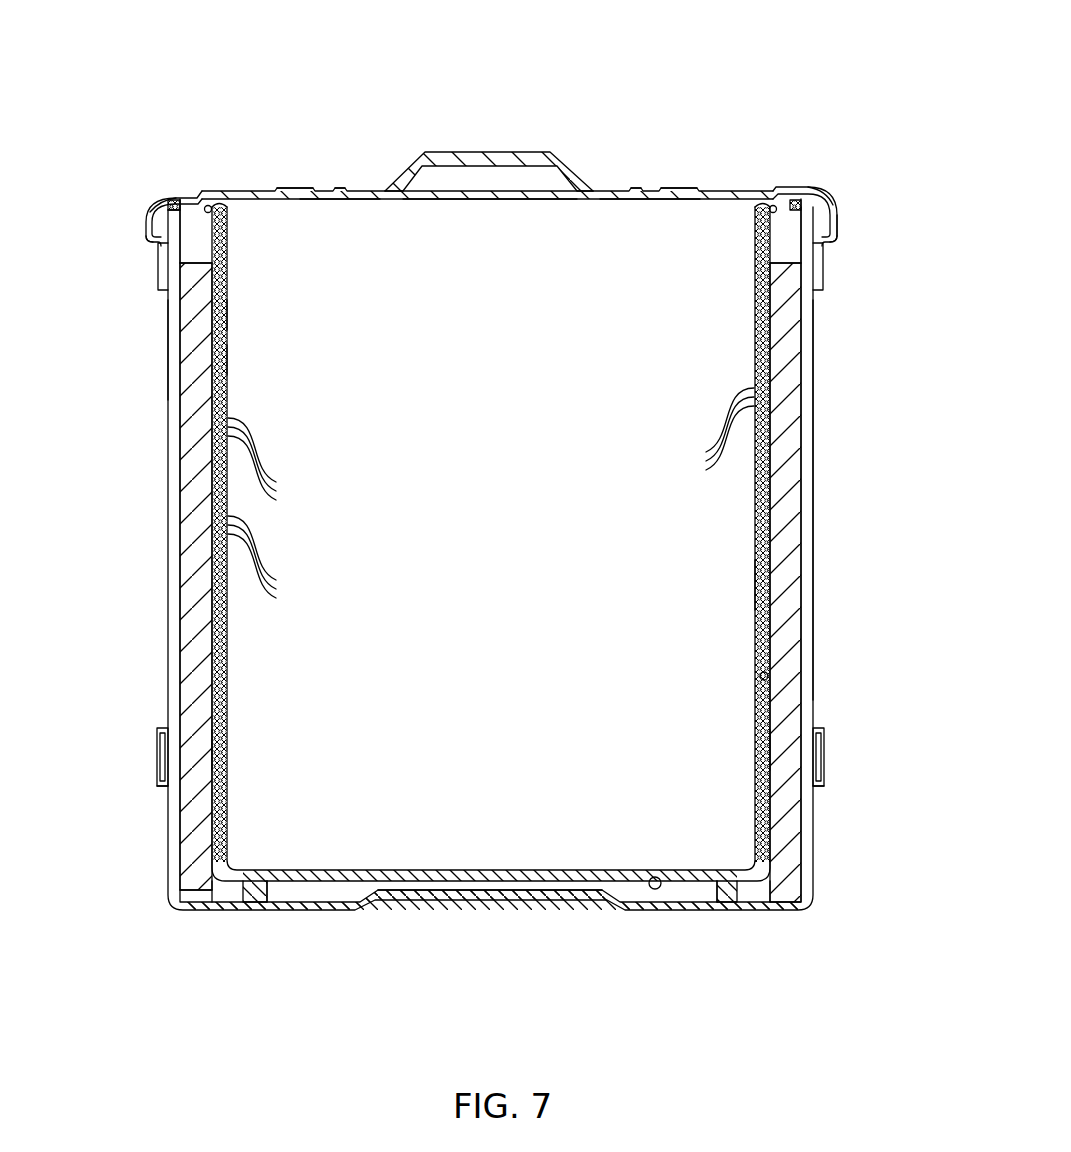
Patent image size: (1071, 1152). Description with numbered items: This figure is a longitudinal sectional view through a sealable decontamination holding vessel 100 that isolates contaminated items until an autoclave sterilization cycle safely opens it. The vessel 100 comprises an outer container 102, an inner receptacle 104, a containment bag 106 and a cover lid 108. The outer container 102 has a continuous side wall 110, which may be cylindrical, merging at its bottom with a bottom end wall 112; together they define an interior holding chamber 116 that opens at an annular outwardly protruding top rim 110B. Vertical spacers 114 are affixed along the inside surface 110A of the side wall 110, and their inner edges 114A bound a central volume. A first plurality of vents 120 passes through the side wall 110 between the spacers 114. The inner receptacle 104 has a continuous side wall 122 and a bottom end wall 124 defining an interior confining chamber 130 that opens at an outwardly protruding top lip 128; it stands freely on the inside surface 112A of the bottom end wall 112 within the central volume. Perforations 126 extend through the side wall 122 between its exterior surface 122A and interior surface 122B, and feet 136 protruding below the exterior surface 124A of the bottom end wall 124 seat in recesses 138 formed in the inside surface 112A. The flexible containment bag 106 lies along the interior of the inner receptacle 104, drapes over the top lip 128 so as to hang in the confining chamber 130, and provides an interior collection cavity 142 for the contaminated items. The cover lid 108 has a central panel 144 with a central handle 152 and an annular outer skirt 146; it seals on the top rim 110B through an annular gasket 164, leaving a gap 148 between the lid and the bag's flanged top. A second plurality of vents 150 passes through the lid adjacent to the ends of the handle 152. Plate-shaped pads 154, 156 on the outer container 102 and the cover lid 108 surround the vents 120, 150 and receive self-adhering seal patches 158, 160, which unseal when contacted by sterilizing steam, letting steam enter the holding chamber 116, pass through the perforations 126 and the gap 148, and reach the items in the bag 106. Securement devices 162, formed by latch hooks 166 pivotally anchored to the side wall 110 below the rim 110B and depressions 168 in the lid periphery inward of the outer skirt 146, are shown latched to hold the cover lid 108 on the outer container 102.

The sealable decontamination holding vessel 100 is at (758, 66).
The outer container 102 is at (813, 488).
The inner receptacle 104 is at (776, 568).
The containment bag 106 is at (229, 358).
The cover lid 108 is at (732, 190).
The side wall 110 is at (180, 412).
The inside surface 110A is at (195, 530).
The top rim 110B is at (166, 202).
The bottom end wall 112 is at (358, 905).
The inside surface 112A is at (368, 906).
The spacers 114 is at (230, 212).
The inner edges 114A is at (200, 896).
The interior holding chamber 116 is at (182, 372).
The first plurality of vents 120 is at (222, 743).
The side wall 122 is at (772, 697).
The exterior surface 122A is at (762, 672).
The interior surface 122B is at (780, 570).
The bottom end wall 124 is at (490, 882).
The exterior surface 124A is at (650, 880).
The perforations 126 is at (491, 493).
The top lip 128 is at (175, 268).
The interior confining chamber 130 is at (229, 318).
The feet 136 is at (245, 897).
The recesses 138 is at (267, 902).
The interior collection cavity 142 is at (524, 534).
The central panel 144 is at (490, 200).
The annular outer skirt 146 is at (838, 218).
The gap 148 is at (760, 200).
The second plurality of vents 150 is at (347, 200).
The central handle 152 is at (508, 150).
The plate-shaped pads 154 is at (158, 730).
The plate-shaped pads 156 is at (340, 189).
The seal patches 158 is at (158, 782).
The seal patches 160 is at (297, 189).
The securement devices 162 is at (133, 218).
The annular gasket 164 is at (197, 195).
The latch hooks 166 is at (158, 224).
The depressions 168 is at (182, 190).